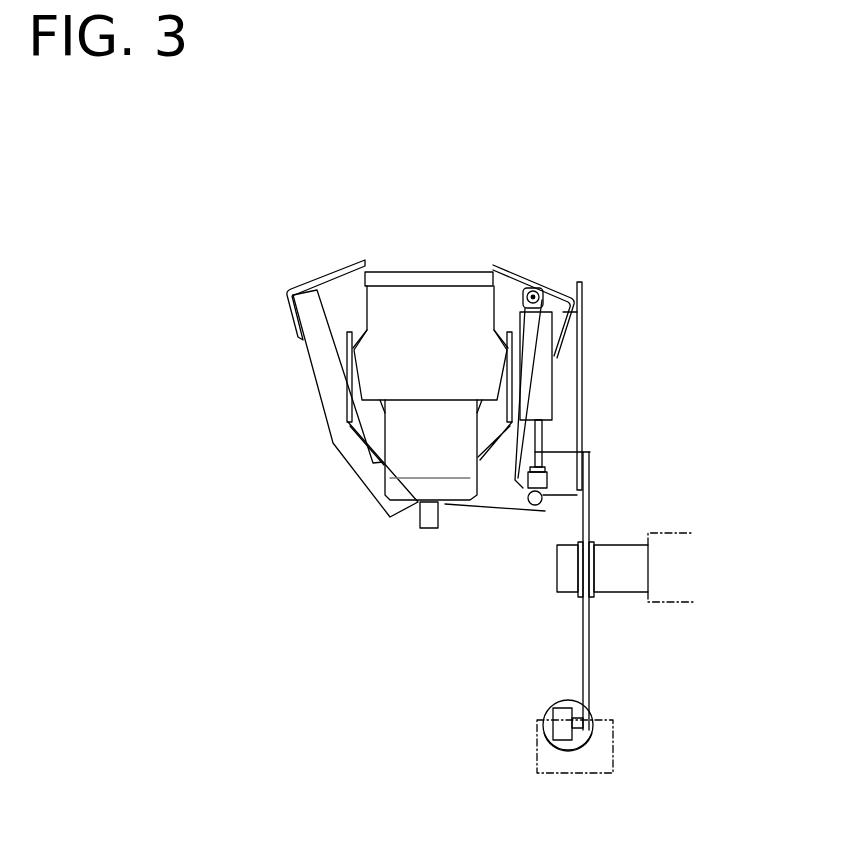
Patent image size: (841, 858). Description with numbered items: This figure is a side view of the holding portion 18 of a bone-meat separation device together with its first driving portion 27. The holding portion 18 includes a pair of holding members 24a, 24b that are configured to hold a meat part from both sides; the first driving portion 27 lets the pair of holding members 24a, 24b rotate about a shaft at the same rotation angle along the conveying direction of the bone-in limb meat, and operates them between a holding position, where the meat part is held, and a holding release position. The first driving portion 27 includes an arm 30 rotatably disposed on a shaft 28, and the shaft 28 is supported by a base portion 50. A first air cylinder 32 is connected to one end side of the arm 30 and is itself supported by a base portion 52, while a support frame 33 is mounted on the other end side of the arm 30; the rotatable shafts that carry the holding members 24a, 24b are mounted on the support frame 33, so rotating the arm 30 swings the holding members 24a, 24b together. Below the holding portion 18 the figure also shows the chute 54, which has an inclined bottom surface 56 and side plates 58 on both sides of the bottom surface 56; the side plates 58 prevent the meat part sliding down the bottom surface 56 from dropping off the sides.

The holding portion 18 is at (431, 237).
The holding member 24a is at (315, 370).
The holding member 24b is at (540, 378).
The side plate 58 is at (360, 407).
The bottom surface 56 is at (405, 465).
The chute 54 is at (406, 504).
The support frame 33 is at (562, 483).
The first driving portion 27 is at (577, 565).
The shaft 28 is at (570, 587).
The base portion 50 is at (680, 526).
The arm 30 is at (590, 680).
The first air cylinder 32 is at (557, 753).
The base portion 52 is at (577, 776).